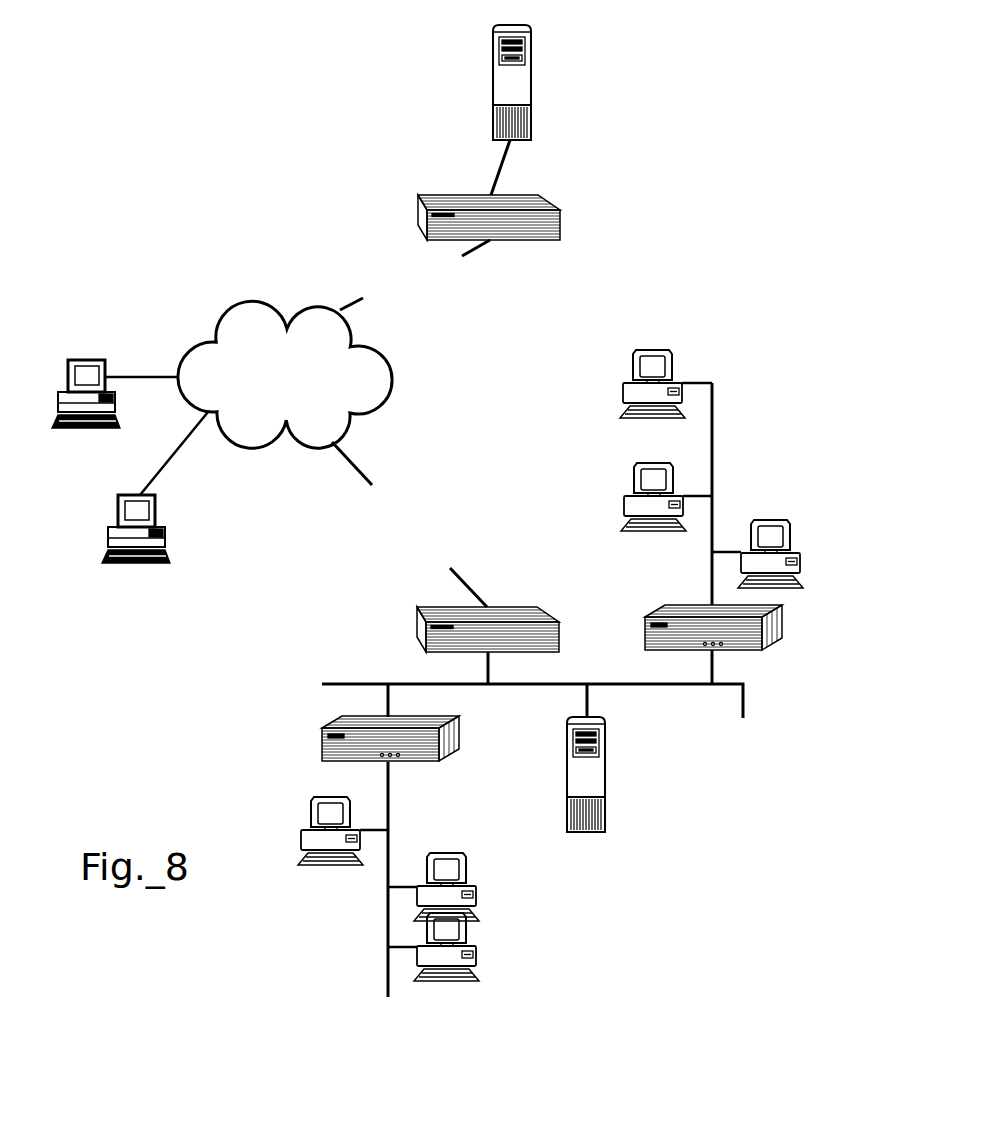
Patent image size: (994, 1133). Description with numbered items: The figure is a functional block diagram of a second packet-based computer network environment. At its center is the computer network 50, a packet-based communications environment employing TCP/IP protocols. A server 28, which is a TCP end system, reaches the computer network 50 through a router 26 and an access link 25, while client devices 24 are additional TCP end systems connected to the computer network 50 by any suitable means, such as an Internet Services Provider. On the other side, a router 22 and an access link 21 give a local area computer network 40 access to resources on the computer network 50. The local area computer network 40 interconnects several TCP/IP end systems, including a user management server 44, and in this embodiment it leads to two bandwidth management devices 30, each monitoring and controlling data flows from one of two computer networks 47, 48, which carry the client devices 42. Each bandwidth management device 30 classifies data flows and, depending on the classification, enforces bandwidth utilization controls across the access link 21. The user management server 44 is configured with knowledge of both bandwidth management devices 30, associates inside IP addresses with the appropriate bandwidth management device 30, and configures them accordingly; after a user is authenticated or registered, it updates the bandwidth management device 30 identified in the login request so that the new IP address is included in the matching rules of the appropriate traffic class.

The computer network 50 is at (235, 306).
The server 28 is at (534, 82).
The router 26 is at (523, 241).
The access link 25 is at (468, 249).
The client devices 24 is at (88, 428).
The access link 21 is at (342, 457).
The router 22 is at (522, 606).
The local area computer network 40 is at (743, 718).
The user management server 44 is at (585, 833).
The computer network 48 is at (712, 440).
The computer network 47 is at (388, 908).
The bandwidth management device 30 is at (783, 617).
The client devices 42 is at (634, 478).